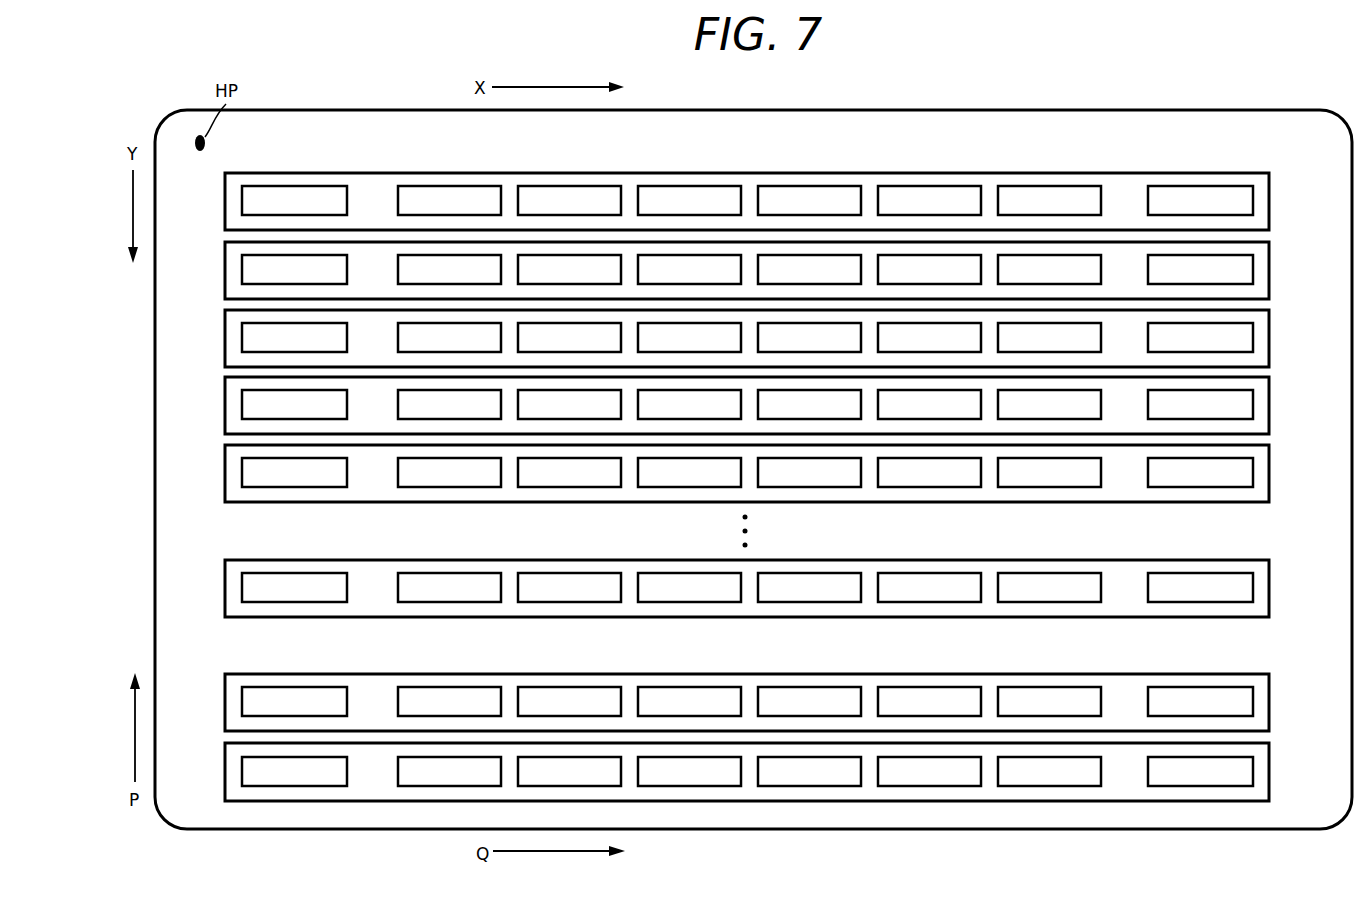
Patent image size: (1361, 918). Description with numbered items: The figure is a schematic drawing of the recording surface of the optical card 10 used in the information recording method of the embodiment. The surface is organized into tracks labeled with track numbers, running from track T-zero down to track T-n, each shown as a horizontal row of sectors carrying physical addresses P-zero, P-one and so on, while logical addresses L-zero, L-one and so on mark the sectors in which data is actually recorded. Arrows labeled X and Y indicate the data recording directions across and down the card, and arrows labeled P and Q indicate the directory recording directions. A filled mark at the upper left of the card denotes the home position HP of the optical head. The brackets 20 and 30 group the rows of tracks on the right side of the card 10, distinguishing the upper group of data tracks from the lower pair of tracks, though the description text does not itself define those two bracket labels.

The optical card 10 is at (889, 110).
The text area rows 20 is at (1279, 620).
The data area rows 30 is at (1279, 807).